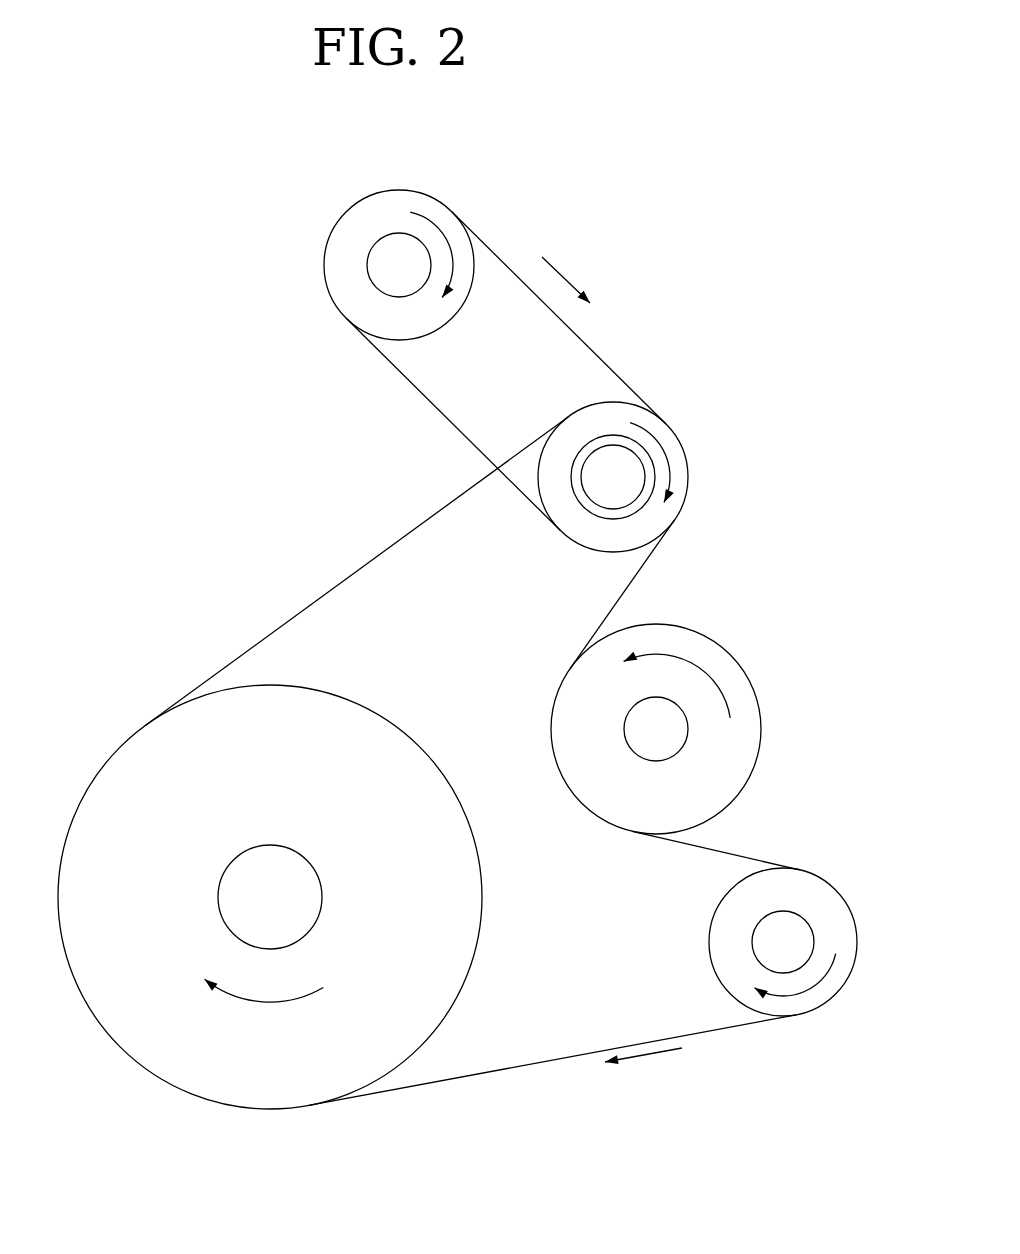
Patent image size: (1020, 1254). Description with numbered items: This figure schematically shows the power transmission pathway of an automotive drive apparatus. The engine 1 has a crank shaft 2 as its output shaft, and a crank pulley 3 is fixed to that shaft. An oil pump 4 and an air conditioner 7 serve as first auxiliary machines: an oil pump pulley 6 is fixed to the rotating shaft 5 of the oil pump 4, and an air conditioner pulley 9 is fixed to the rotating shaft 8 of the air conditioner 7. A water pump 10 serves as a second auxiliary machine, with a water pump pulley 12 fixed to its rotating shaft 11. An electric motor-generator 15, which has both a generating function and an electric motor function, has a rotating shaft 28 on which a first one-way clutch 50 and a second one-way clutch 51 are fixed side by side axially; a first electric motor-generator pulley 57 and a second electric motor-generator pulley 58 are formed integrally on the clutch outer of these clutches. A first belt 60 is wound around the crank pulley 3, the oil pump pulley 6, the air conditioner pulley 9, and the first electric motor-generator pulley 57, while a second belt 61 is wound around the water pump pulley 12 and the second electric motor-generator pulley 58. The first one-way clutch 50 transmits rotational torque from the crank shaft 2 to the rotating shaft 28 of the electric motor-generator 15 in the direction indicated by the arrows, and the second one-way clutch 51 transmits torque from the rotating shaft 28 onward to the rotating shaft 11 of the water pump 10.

The engine 1 is at (296, 885).
The crank shaft 2 is at (300, 898).
The crank pulley 3 is at (460, 883).
The oil pump 4 is at (651, 729).
The rotating shaft 5 is at (643, 717).
The oil pump pulley 6 is at (592, 740).
The air conditioner 7 is at (765, 923).
The rotating shaft 8 is at (765, 947).
The air conditioner pulley 9 is at (727, 917).
The water pump 10 is at (378, 250).
The rotating shaft 11 is at (390, 277).
The water pump pulley 12 is at (342, 255).
The electric motor-generator 15 is at (606, 502).
The rotating shaft 28 is at (607, 493).
The first one-way clutch 50 is at (557, 512).
The second one-way clutch 51 is at (577, 503).
The first electric motor-generator pulley 57 is at (569, 477).
The second electric motor-generator pulley 58 is at (553, 488).
The first belt 60 is at (352, 577).
The second belt 61 is at (498, 257).